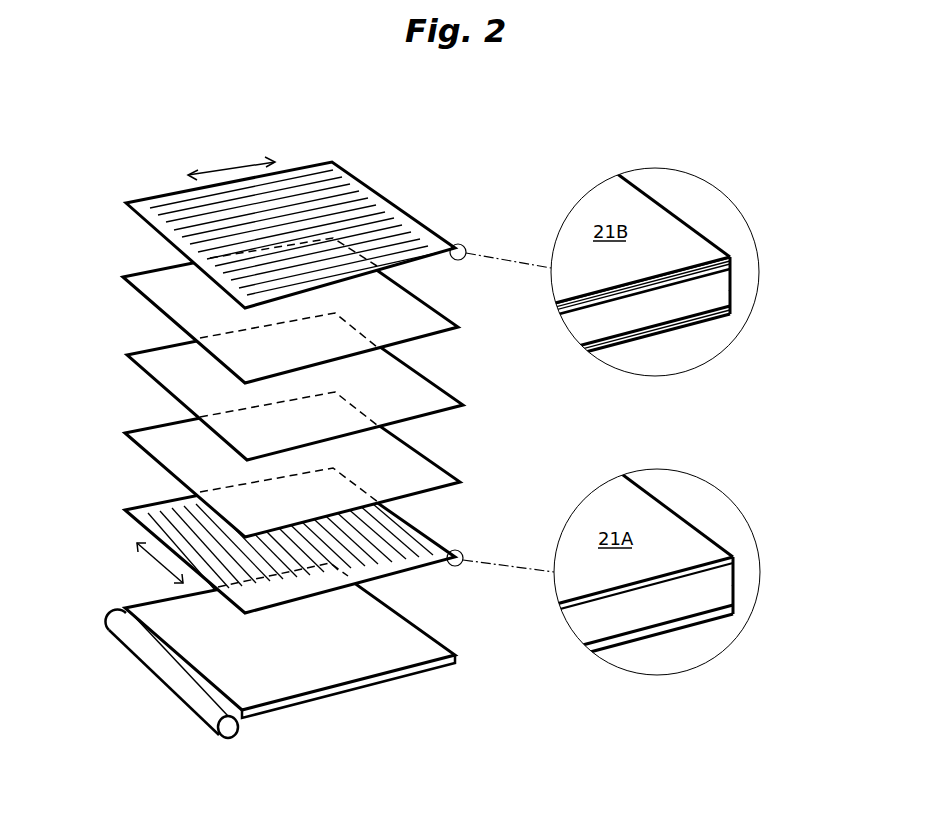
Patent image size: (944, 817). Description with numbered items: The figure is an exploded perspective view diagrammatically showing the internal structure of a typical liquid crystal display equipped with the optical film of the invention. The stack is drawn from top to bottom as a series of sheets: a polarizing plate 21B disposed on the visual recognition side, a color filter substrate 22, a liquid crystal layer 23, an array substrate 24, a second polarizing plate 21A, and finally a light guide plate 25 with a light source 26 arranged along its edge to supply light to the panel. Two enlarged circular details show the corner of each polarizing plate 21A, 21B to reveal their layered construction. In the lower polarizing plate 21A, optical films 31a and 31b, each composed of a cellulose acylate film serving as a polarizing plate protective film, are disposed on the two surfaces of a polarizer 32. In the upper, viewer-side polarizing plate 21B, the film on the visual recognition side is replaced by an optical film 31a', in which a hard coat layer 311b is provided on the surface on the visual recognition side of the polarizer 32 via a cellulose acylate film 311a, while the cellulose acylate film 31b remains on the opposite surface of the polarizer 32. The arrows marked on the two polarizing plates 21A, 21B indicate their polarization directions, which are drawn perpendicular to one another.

The polarizing plate 21A is at (423, 542).
The polarizing plate 21B is at (162, 210).
The color filter substrate 22 is at (425, 317).
The liquid crystal layer 23 is at (430, 393).
The array substrate 24 is at (428, 472).
The light guide plate 25 is at (427, 648).
The light source 26 is at (232, 725).
The cellulose acylate film 31a is at (672, 637).
The cellulose acylate film 31b is at (732, 315).
The optical film 31a' is at (700, 264).
The cellulose acylate film 311a is at (735, 263).
The hard coat layer 311b is at (732, 257).
The polarizer 32 is at (725, 280).